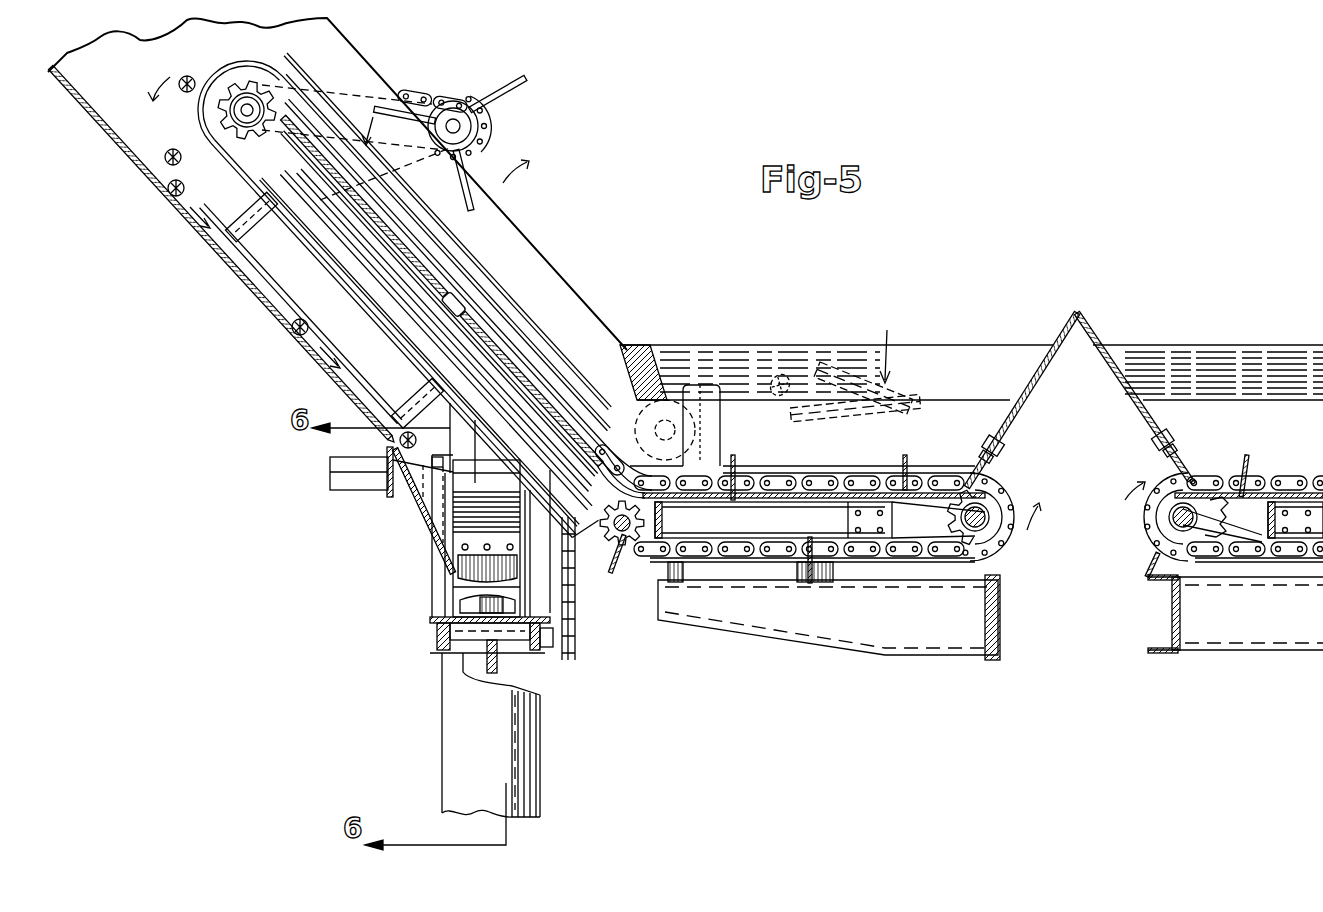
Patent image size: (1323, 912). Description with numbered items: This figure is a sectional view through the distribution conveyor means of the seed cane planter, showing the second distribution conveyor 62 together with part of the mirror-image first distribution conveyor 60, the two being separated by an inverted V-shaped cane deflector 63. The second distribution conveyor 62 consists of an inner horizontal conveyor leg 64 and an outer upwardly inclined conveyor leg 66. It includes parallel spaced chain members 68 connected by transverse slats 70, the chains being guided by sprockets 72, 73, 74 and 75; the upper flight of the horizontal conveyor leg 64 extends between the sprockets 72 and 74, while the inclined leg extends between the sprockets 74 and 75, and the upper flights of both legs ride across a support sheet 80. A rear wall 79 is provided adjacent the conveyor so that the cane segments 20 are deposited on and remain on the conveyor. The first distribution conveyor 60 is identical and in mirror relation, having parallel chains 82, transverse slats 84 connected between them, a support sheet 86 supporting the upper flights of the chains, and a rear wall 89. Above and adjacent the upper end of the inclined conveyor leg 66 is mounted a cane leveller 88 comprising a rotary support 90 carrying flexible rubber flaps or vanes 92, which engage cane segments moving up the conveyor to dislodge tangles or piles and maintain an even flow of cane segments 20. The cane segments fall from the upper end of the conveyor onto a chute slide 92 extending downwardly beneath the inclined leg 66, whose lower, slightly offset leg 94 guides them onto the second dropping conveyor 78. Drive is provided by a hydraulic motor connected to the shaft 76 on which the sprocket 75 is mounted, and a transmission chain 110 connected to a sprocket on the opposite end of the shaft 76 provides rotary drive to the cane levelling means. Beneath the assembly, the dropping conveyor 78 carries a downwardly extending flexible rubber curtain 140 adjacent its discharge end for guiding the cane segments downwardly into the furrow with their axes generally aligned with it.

The seed cane segments 20 is at (885, 386).
The first distribution conveyor 60 is at (1249, 444).
The second distribution conveyor 62 is at (557, 252).
The inverted V-shaped cane deflector 63 is at (1098, 340).
The inner horizontal conveyor leg 64 is at (760, 460).
The outer upwardly inclined conveyor leg 66 is at (518, 328).
The chain members 68 is at (813, 478).
The transverse slats 70 is at (810, 583).
The sprocket 72 is at (1003, 535).
The sprocket 73 is at (650, 565).
The sprocket 74 is at (676, 430).
The sprocket 75 is at (260, 73).
The shaft 76 is at (243, 110).
The second dropping conveyor 78 is at (428, 591).
The rear wall 79 is at (512, 270).
The support sheet 80 is at (462, 317).
The chains 82 is at (1142, 532).
The transverse slats 84 is at (1252, 465).
The support sheet 86 is at (1236, 495).
The cane leveller 88 is at (510, 143).
The rear wall 89 is at (1283, 415).
The rotary support 90 is at (493, 128).
The flexible rubber flaps or vanes / chute slide 92 is at (527, 78).
The lower offset leg 94 is at (435, 512).
The transmission chain 110 is at (419, 88).
The flexible rubber curtain 140 is at (442, 726).